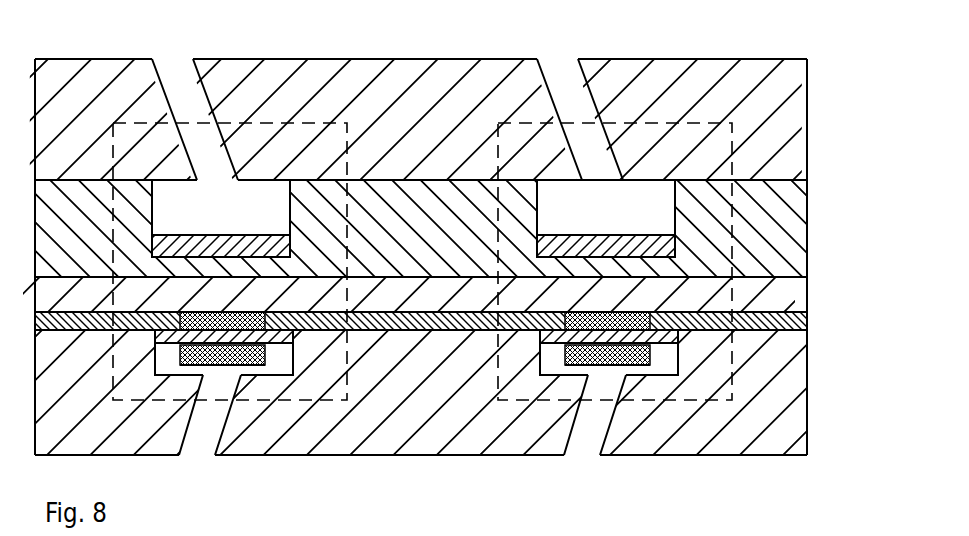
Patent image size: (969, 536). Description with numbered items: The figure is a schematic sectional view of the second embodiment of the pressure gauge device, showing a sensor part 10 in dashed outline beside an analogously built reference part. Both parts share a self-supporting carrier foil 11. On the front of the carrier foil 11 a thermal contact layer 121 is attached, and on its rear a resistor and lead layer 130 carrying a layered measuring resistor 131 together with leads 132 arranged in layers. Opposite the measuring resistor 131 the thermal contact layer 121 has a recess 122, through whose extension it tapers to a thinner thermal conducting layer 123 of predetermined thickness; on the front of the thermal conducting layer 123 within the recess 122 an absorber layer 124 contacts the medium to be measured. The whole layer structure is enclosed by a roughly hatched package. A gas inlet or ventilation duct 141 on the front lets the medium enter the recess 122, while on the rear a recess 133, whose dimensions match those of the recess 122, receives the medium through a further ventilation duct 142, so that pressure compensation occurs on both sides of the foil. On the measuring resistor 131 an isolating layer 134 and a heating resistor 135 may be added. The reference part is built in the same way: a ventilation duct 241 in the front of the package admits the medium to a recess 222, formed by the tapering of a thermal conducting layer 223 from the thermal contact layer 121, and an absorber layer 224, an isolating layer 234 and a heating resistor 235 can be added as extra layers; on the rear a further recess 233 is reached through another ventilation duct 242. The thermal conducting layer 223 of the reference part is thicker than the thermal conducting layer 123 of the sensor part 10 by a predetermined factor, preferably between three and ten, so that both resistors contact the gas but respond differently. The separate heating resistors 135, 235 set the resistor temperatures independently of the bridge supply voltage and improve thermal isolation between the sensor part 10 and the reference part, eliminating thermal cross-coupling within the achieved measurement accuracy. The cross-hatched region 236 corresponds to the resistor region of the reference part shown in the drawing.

The sensor part 10 is at (96, 135).
The carrier foil 11 is at (424, 300).
The thermal contact layer 121 is at (98, 241).
The recess 122 is at (233, 206).
The thermal conducting layer 123 is at (222, 258).
The absorber layer 124 is at (225, 237).
The resistor and lead layer 130 is at (745, 317).
The measuring resistor 131 is at (228, 320).
The leads 132 is at (397, 334).
The recess 133 is at (262, 346).
The isolating layer 134 is at (232, 333).
The heating resistor 135 is at (236, 362).
The ventilation duct 141 is at (200, 106).
The ventilation duct 142 is at (218, 446).
The recess 222 is at (618, 205).
The thermal conducting layer 223 is at (607, 258).
The absorber layer 224 is at (610, 237).
The recess 233 is at (648, 346).
The isolating layer 234 is at (620, 330).
The heating resistor 235 is at (616, 349).
The upper joint region 236 is at (617, 320).
The ventilation duct 241 is at (586, 106).
The ventilation duct 242 is at (608, 446).